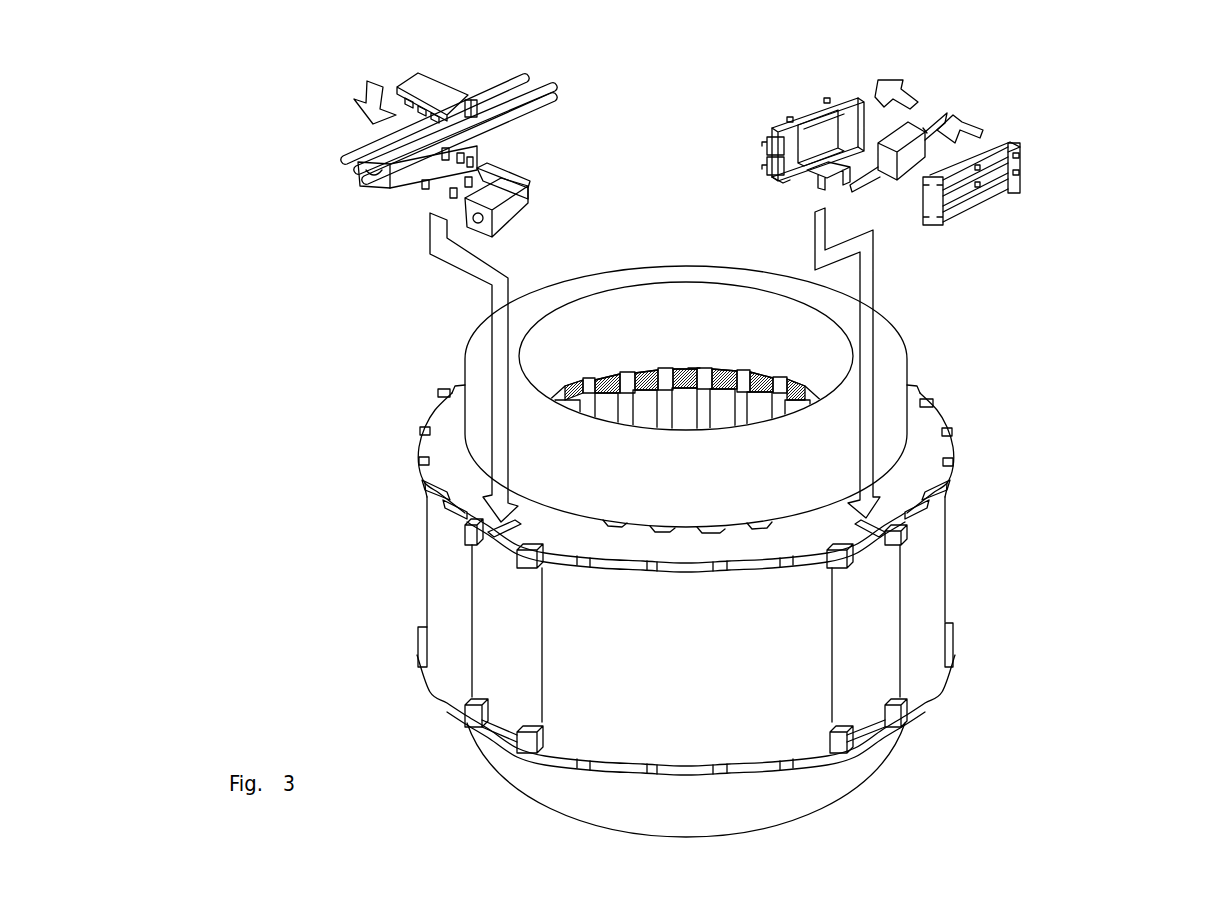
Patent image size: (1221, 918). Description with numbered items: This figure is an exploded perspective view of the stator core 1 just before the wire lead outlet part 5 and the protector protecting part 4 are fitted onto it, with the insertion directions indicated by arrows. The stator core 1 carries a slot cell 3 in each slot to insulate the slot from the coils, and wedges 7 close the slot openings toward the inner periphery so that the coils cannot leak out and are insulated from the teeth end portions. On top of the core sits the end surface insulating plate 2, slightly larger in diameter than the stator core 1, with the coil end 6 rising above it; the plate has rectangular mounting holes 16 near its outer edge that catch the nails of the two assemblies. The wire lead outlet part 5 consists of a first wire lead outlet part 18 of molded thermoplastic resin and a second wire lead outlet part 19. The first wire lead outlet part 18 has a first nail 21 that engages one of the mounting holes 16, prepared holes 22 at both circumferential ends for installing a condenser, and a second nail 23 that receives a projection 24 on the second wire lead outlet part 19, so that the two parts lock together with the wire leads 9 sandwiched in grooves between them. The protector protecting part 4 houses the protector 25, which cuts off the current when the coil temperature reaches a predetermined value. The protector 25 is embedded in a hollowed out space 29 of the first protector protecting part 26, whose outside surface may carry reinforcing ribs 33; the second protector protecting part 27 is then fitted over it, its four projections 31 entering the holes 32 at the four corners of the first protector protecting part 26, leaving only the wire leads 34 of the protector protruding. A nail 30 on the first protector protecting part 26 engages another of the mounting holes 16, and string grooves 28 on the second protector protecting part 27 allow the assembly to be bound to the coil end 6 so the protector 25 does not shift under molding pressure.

The stator core 1 is at (497, 603).
The end surface insulating plate 2 is at (933, 441).
The slot cell 3 is at (688, 368).
The protector protecting part 4 is at (938, 141).
The wire lead outlet part 5 is at (487, 155).
The coil end 6 is at (893, 350).
The wedges 7 is at (708, 368).
The wire leads 9 is at (443, 97).
The mounting holes 16 is at (513, 528).
The first wire lead outlet part 18 is at (505, 177).
The second wire lead outlet part 19 is at (517, 110).
The first nail 21 is at (452, 195).
The prepared holes 22 is at (493, 233).
The second nail 23 is at (490, 188).
The projection 24 is at (480, 110).
The protector 25 is at (917, 133).
The first protector protecting part 26 is at (847, 133).
The second protector protecting part 27 is at (963, 210).
The string grooves 28 is at (963, 217).
The hollowed out space 29 is at (823, 130).
The nail 30 is at (817, 183).
The projections 31 is at (995, 145).
The holes 32 is at (773, 177).
The ribs 33 is at (760, 137).
The wire leads 34 is at (860, 193).